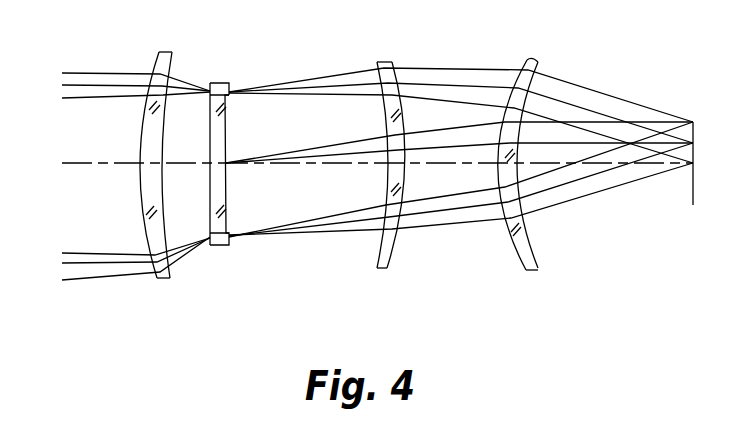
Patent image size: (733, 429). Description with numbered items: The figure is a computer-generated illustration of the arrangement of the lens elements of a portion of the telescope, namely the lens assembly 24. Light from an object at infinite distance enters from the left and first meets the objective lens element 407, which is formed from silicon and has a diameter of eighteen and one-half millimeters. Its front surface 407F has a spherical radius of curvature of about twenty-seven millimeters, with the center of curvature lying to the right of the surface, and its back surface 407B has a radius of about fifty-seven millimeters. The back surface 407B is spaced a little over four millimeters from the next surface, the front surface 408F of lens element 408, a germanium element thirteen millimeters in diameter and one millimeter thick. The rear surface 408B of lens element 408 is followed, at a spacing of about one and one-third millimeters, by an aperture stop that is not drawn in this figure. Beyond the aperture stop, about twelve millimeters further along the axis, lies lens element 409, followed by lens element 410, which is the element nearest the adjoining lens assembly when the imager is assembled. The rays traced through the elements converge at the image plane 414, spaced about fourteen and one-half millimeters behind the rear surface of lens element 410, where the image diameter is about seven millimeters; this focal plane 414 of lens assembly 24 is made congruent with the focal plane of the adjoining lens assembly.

The lens assembly 24 is at (316, 343).
The objective lens element 407 is at (165, 173).
The front surface 407F is at (160, 56).
The back surface 407B is at (173, 59).
The lens element 408 is at (225, 185).
The front surface 408F is at (210, 141).
The rear surface 408B is at (226, 134).
The lens element 409 is at (378, 269).
The lens element 410 is at (532, 271).
The image plane 414 is at (693, 205).